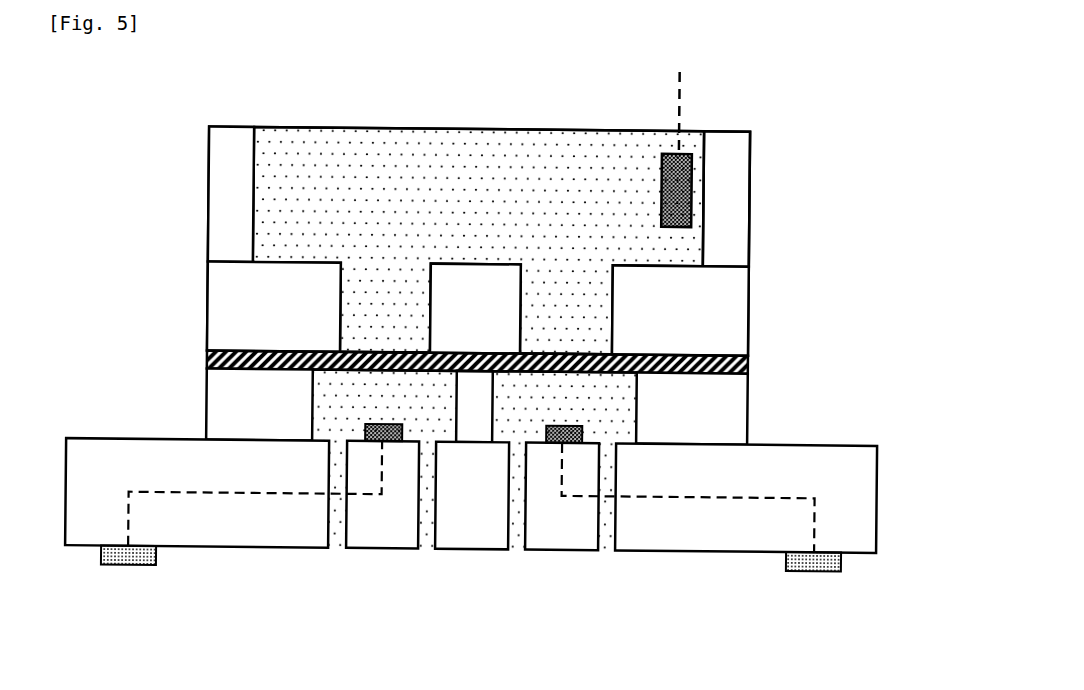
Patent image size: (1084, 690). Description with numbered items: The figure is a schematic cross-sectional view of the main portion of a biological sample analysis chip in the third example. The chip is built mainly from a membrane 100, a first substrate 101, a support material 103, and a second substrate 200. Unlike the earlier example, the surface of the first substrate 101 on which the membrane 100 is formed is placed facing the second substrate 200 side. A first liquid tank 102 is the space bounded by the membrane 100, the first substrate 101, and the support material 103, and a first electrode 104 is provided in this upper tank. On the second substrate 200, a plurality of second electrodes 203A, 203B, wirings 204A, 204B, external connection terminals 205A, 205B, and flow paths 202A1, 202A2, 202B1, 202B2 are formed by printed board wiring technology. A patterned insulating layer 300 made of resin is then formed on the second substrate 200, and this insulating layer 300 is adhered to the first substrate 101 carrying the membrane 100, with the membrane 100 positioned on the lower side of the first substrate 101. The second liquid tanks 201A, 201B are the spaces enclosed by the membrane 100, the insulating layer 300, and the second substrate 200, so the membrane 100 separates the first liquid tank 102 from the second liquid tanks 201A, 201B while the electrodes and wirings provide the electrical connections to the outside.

The membrane 100 is at (742, 362).
The first substrate 101 is at (755, 268).
The first liquid tank 102 is at (457, 148).
The support material 103 is at (220, 163).
The first electrode 104 is at (683, 160).
The second substrate 200 is at (882, 446).
The second liquid tank 201A is at (382, 398).
The second liquid tank 201B is at (565, 401).
The flow path 202A1 is at (338, 543).
The flow path 202A2 is at (428, 538).
The flow path 202B1 is at (520, 538).
The flow path 202B2 is at (612, 541).
The second electrode 203A is at (390, 443).
The second electrode 203B is at (555, 443).
The wiring 204A is at (258, 497).
The wiring 204B is at (703, 500).
The external connection terminal 205A is at (130, 568).
The external connection terminal 205B is at (815, 574).
The insulating layer 300 is at (755, 377).